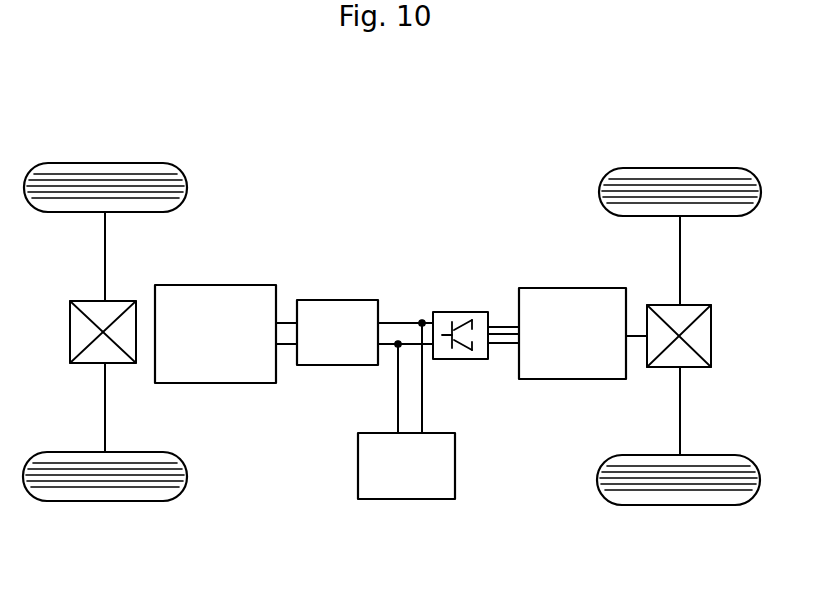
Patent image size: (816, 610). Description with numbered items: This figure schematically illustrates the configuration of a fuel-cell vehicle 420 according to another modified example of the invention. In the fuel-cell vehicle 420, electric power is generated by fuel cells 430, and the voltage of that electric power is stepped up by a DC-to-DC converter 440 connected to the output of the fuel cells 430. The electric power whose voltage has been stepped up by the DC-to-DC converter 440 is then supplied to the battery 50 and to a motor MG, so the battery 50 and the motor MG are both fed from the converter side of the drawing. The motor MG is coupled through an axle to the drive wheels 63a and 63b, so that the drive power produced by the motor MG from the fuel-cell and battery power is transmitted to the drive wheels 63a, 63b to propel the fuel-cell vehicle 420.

The fuel-cell vehicle 420 is at (417, 154).
The fuel cells 430 is at (212, 285).
The DC-to-DC converter 440 is at (333, 300).
The motor MG is at (553, 288).
The battery 50 is at (455, 466).
The drive wheel 63a is at (681, 168).
The drive wheel 63b is at (678, 505).